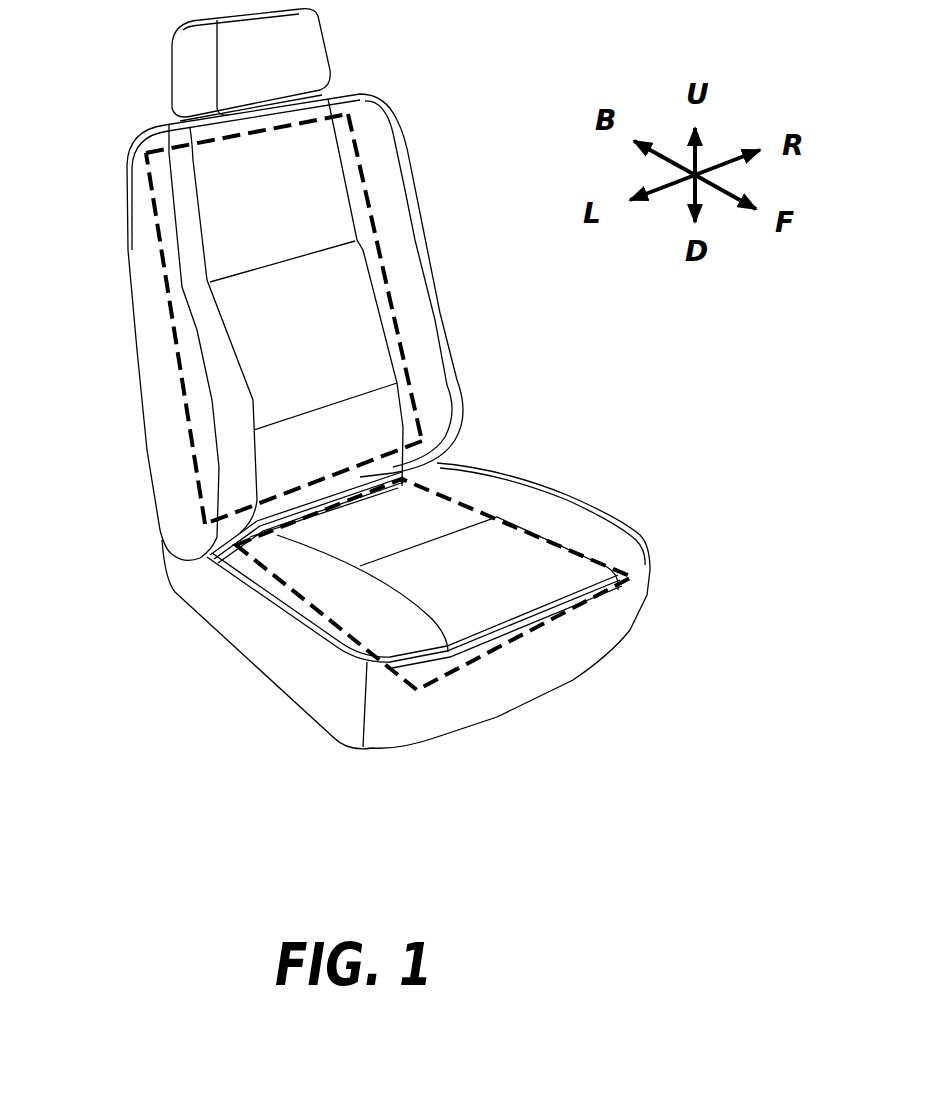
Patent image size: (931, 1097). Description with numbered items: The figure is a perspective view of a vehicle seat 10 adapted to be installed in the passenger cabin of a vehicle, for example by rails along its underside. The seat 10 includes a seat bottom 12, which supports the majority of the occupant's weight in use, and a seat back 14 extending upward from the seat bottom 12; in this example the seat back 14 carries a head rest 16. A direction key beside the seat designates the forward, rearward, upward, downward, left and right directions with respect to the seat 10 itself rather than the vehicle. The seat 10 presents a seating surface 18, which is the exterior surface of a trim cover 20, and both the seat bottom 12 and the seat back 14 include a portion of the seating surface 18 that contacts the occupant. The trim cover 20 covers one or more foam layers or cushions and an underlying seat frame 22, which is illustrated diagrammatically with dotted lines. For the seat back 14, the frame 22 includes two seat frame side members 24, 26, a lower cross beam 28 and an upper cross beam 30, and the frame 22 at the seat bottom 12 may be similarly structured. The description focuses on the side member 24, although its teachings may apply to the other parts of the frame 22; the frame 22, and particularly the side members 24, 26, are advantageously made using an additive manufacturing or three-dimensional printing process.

The vehicle seat 10 is at (467, 130).
The seat bottom 12 is at (523, 507).
The seat back 14 is at (403, 262).
The head rest 16 is at (300, 30).
The seating surface 18 is at (537, 597).
The trim cover 20 is at (607, 550).
The seat frame 22 is at (153, 183).
The seat frame side member 24 is at (407, 373).
The seat frame side member 26 is at (187, 403).
The lower cross beam 28 is at (237, 513).
The upper cross beam 30 is at (173, 152).